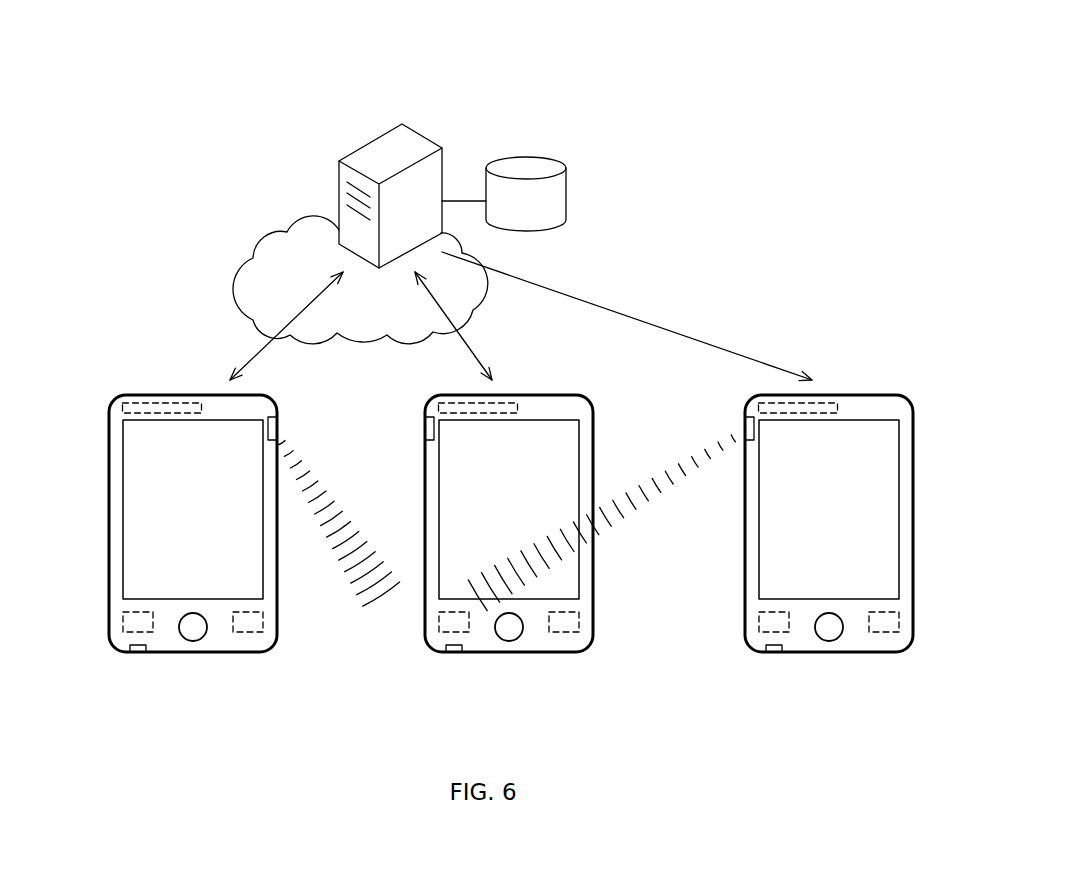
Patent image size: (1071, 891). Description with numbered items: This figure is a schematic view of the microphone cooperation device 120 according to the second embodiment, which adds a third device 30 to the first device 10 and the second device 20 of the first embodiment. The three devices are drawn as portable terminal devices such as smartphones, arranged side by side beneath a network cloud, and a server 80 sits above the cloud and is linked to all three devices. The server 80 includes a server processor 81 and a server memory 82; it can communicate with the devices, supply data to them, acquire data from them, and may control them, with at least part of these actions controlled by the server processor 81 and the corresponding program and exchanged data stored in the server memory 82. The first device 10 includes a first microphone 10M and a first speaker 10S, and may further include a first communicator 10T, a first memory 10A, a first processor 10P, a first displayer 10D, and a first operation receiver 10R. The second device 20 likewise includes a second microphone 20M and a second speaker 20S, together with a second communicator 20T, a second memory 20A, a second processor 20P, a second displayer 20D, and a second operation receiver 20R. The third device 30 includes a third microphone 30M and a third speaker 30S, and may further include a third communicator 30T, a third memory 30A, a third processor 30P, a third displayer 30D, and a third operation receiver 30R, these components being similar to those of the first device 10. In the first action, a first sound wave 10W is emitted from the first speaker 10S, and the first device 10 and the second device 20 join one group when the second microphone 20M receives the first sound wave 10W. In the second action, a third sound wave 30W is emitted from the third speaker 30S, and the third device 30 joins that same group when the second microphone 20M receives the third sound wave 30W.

The microphone cooperation device 120 is at (683, 100).
The server 80 is at (502, 118).
The server processor 81 is at (421, 133).
The server memory 82 is at (543, 157).
The first device 10 is at (100, 392).
The first displayer 10D is at (140, 508).
The first communicator 10T is at (180, 402).
The first speaker 10S is at (277, 428).
The first processor 10P is at (115, 623).
The first operation receiver 10R is at (193, 632).
The first memory 10A is at (265, 618).
The first microphone 10M is at (138, 653).
The first sound wave 10W is at (335, 515).
The second device 20 is at (567, 383).
The second displayer 20D is at (562, 462).
The second communicator 20T is at (502, 402).
The second speaker 20S is at (427, 428).
The second processor 20P is at (434, 622).
The second operation receiver 20R is at (508, 632).
The second memory 20A is at (583, 618).
The second microphone 20M is at (453, 653).
The third device 30 is at (890, 382).
The third displayer 30D is at (775, 573).
The third communicator 30T is at (822, 403).
The third speaker 30S is at (747, 428).
The third processor 30P is at (757, 622).
The third operation receiver 30R is at (832, 632).
The third memory 30A is at (888, 633).
The third microphone 30M is at (773, 653).
The third sound wave 30W is at (683, 467).